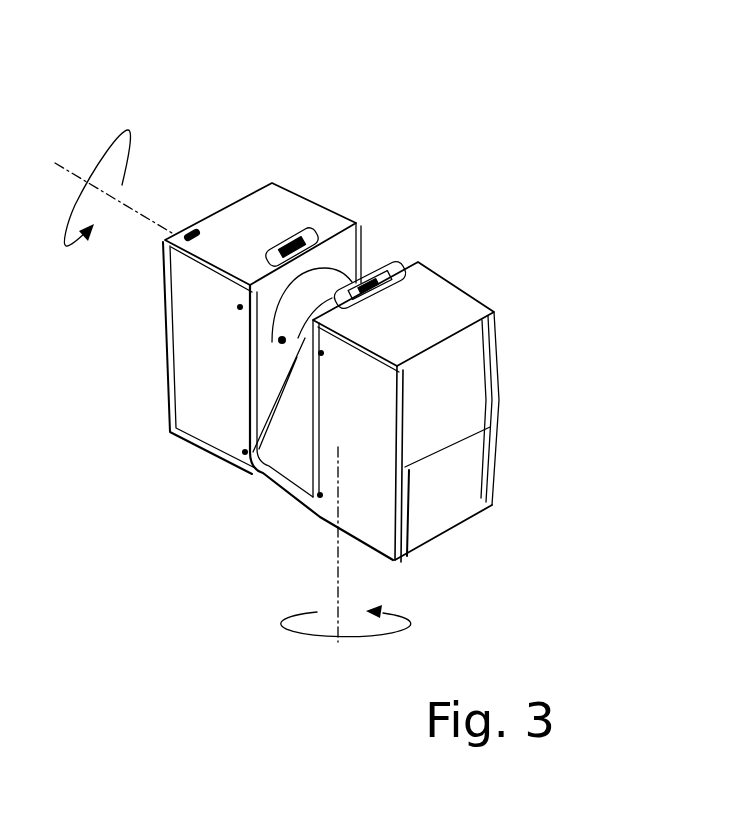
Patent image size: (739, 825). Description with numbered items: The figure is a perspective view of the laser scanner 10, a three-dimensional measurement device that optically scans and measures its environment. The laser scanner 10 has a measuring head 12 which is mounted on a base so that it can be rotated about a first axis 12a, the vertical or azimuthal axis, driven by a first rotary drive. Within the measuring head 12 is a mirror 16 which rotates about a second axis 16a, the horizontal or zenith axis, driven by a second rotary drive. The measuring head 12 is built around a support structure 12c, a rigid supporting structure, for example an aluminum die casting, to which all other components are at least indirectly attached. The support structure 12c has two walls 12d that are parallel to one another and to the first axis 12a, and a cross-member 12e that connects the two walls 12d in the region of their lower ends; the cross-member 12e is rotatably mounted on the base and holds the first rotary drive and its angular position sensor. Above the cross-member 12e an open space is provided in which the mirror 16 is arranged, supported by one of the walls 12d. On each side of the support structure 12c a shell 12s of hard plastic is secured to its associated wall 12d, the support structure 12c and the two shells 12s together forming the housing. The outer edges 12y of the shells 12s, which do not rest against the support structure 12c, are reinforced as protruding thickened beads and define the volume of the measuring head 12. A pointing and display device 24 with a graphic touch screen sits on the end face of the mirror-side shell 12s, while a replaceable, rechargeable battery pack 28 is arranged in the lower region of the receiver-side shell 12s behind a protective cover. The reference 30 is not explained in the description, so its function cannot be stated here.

The laser scanner 10 is at (503, 197).
The measuring head 12 is at (163, 373).
The first axis 12a is at (337, 637).
The support structure 12c is at (293, 598).
The walls 12d is at (258, 410).
The cross-member 12e is at (297, 457).
The shell 12s is at (190, 312).
The outer edges 12y is at (167, 413).
The mirror 16 is at (342, 275).
The second axis 16a is at (140, 217).
The pointing and display device 24 is at (248, 188).
The battery pack 28 is at (463, 470).
The slot 30 is at (322, 233).